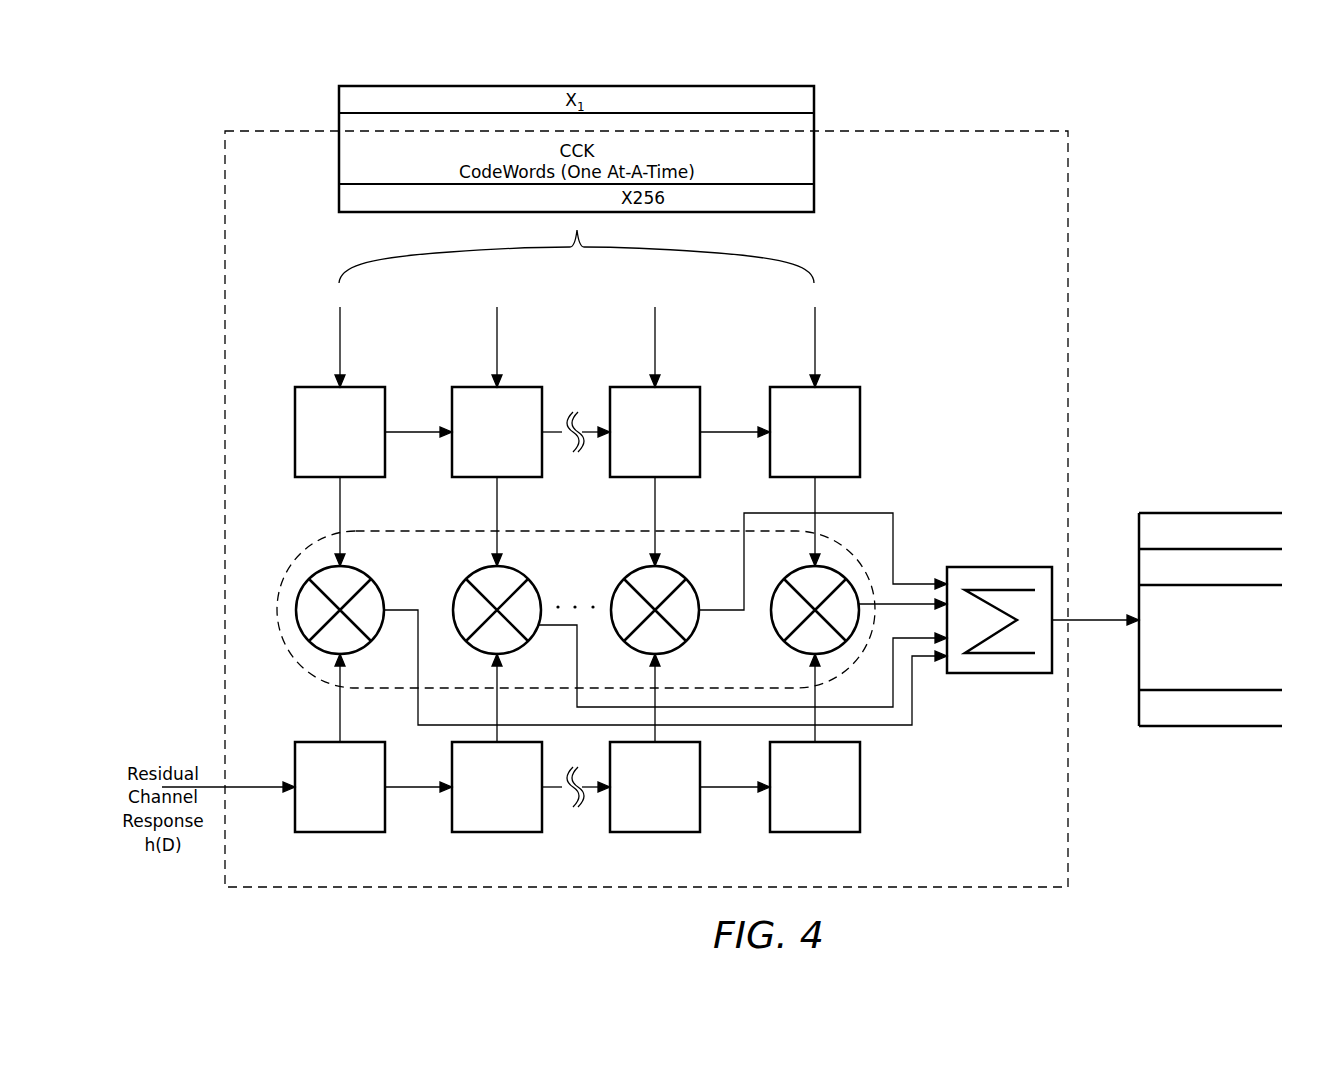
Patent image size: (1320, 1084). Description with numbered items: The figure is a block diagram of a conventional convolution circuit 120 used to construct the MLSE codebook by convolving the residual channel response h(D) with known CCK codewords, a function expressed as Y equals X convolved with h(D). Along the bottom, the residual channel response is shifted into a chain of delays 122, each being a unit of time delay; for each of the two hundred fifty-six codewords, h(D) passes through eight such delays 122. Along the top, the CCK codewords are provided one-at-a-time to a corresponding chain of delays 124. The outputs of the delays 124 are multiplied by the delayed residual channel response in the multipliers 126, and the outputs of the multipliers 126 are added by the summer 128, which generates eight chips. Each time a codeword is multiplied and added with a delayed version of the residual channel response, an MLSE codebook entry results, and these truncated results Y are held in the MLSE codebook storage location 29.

The convolution circuit 120 is at (1068, 843).
The delays 122 is at (340, 832).
The delays 124 is at (365, 387).
The multipliers 126 is at (298, 667).
The summer 128 is at (998, 675).
The MLSE codebook storage location 29 is at (1173, 513).